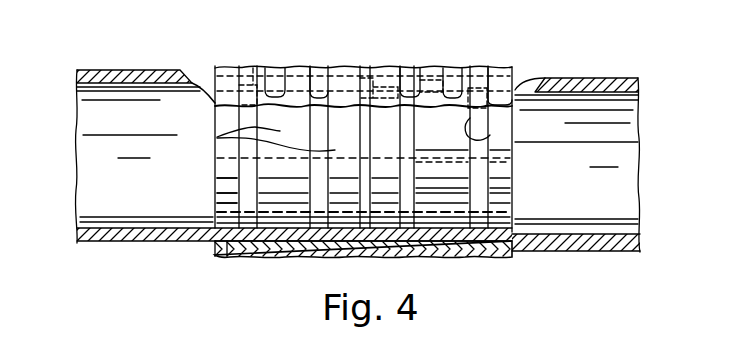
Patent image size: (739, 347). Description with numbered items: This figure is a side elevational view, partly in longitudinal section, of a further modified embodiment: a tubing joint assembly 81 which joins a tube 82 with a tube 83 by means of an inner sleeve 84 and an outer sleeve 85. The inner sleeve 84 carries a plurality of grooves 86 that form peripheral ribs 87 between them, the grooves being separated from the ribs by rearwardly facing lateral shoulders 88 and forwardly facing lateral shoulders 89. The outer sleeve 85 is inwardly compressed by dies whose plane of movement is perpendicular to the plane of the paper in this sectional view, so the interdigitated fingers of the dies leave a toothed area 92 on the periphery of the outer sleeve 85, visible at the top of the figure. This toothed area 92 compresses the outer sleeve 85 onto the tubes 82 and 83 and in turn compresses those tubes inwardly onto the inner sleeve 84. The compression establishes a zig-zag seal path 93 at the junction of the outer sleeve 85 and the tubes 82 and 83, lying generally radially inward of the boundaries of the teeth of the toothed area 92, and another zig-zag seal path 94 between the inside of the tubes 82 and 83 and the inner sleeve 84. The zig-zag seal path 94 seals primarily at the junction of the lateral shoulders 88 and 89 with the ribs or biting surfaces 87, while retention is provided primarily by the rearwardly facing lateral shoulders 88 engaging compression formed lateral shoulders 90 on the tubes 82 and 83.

The tubing joint assembly 81 is at (470, 58).
The tube 82 is at (121, 70).
The tube 83 is at (597, 78).
The inner sleeve 84 is at (214, 192).
The outer sleeve 85 is at (228, 252).
The grooves 86 is at (217, 137).
The peripheral ribs 87 is at (305, 215).
The rearwardly facing lateral shoulders 88 is at (418, 153).
The forwardly facing lateral shoulders 89 is at (418, 177).
The compression formed lateral shoulders 90 is at (490, 218).
The toothed area 92 is at (340, 66).
The zig-zag seal path 93 is at (251, 66).
The zig-zag seal path 94 is at (411, 88).